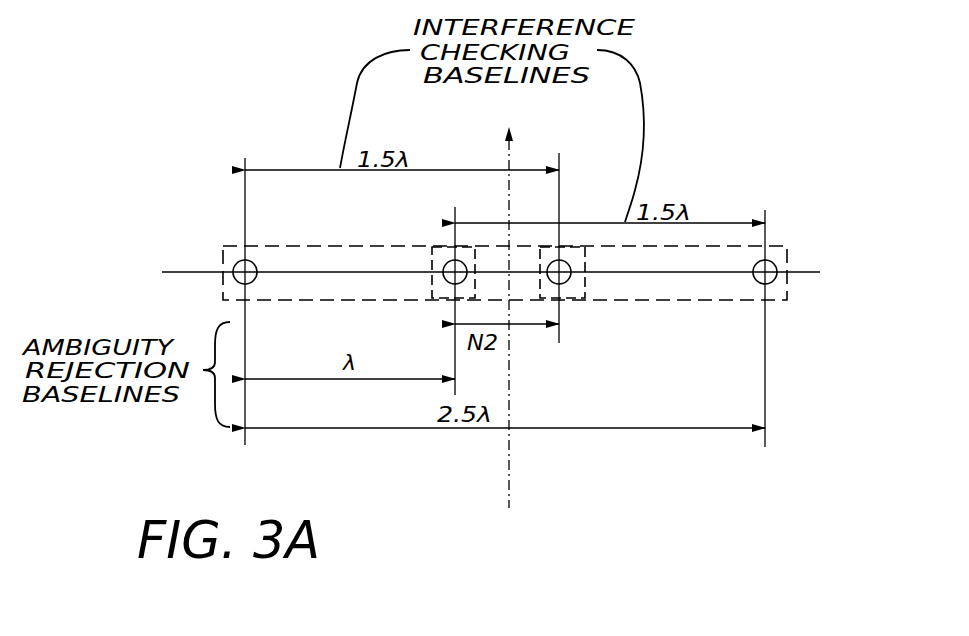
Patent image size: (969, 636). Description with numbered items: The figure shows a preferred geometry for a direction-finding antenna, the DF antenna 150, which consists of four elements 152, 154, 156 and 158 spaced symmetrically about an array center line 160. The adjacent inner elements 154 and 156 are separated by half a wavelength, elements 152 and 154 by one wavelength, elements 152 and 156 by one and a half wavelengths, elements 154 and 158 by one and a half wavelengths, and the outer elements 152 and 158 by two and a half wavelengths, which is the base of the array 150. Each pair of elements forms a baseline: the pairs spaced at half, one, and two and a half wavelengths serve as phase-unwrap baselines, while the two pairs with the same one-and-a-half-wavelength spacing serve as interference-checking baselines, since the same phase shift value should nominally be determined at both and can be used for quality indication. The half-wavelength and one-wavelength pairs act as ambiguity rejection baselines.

The DF antenna 150 is at (233, 147).
The antenna element 152 is at (233, 266).
The antenna element 154 is at (448, 262).
The antenna element 156 is at (565, 262).
The antenna element 158 is at (775, 283).
The array center line 160 is at (510, 490).